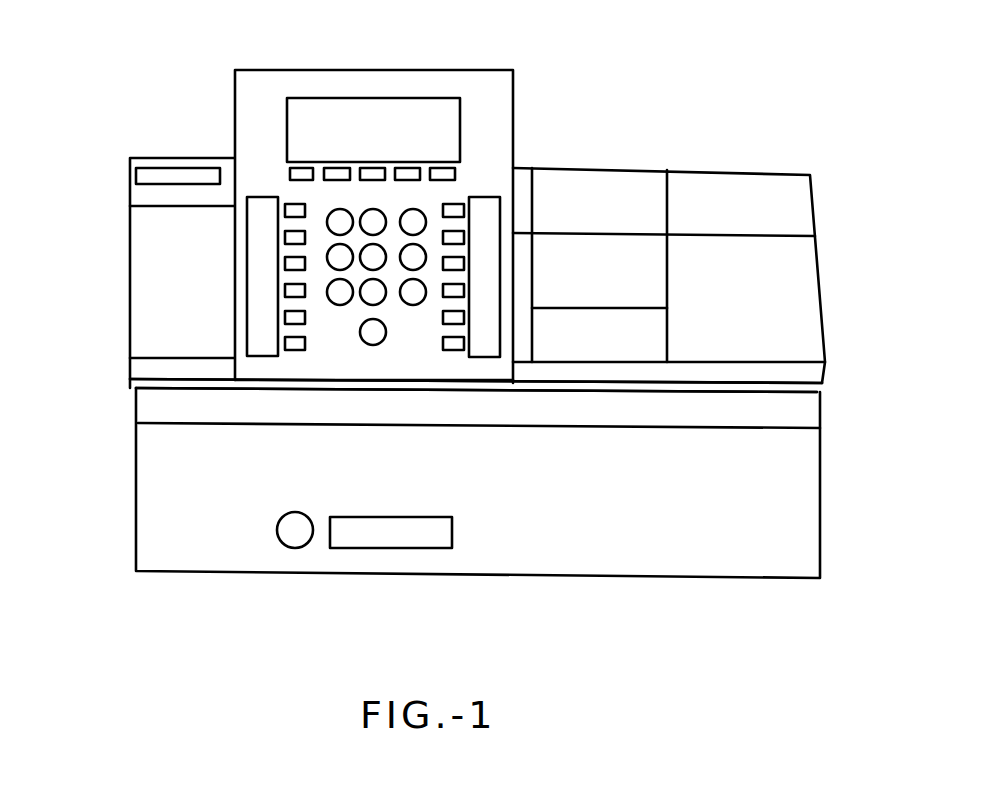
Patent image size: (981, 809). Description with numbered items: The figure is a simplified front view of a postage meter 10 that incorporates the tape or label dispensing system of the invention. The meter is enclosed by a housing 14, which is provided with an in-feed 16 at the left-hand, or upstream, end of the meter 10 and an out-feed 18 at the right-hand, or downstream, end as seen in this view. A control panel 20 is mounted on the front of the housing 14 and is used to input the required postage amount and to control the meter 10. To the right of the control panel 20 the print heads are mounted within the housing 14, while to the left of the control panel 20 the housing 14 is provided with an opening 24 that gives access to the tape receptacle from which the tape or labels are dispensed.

The postage meter 10 is at (463, 303).
The housing 14 is at (560, 188).
The in-feed 16 is at (126, 389).
The out-feed 18 is at (827, 386).
The control panel 20 is at (276, 90).
The opening 24 is at (170, 172).